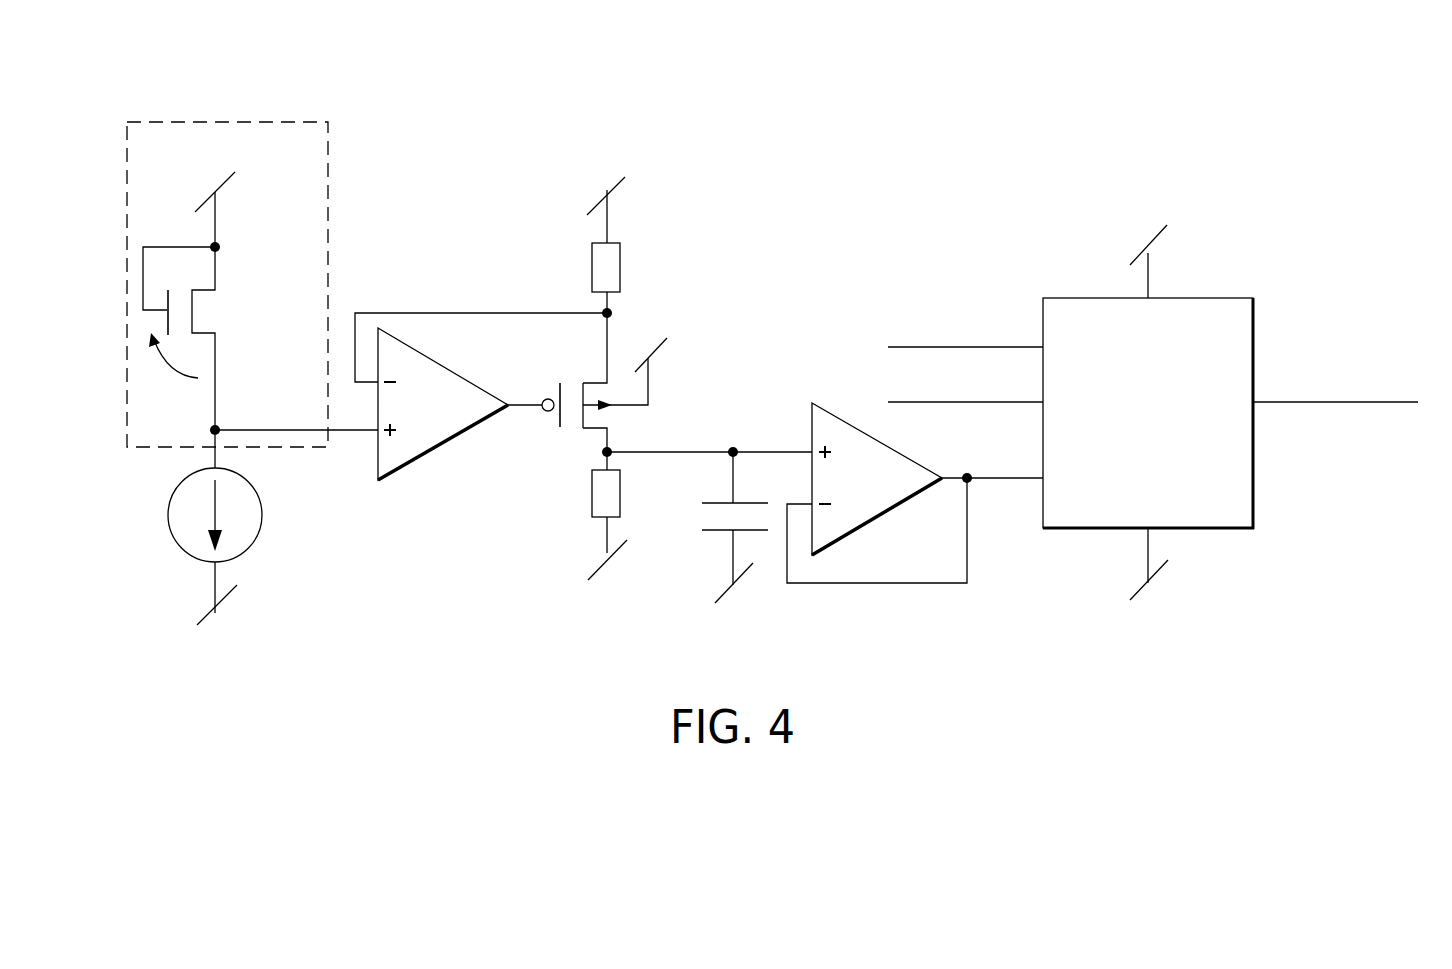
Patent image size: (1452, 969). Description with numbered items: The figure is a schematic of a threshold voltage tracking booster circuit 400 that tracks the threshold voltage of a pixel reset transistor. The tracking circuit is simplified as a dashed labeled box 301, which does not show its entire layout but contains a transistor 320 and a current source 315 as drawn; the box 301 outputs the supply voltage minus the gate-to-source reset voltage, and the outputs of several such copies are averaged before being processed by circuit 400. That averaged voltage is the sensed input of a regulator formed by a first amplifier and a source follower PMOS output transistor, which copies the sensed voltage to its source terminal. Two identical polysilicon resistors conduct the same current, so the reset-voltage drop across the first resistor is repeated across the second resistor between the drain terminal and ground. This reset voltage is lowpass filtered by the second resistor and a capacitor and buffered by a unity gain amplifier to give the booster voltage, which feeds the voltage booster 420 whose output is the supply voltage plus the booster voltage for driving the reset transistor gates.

The labeled box 301 is at (225, 122).
The current source 315 is at (181, 552).
The reset transistor 320 is at (195, 325).
The circuit 400 is at (598, 116).
The voltage booster 420 is at (1135, 493).